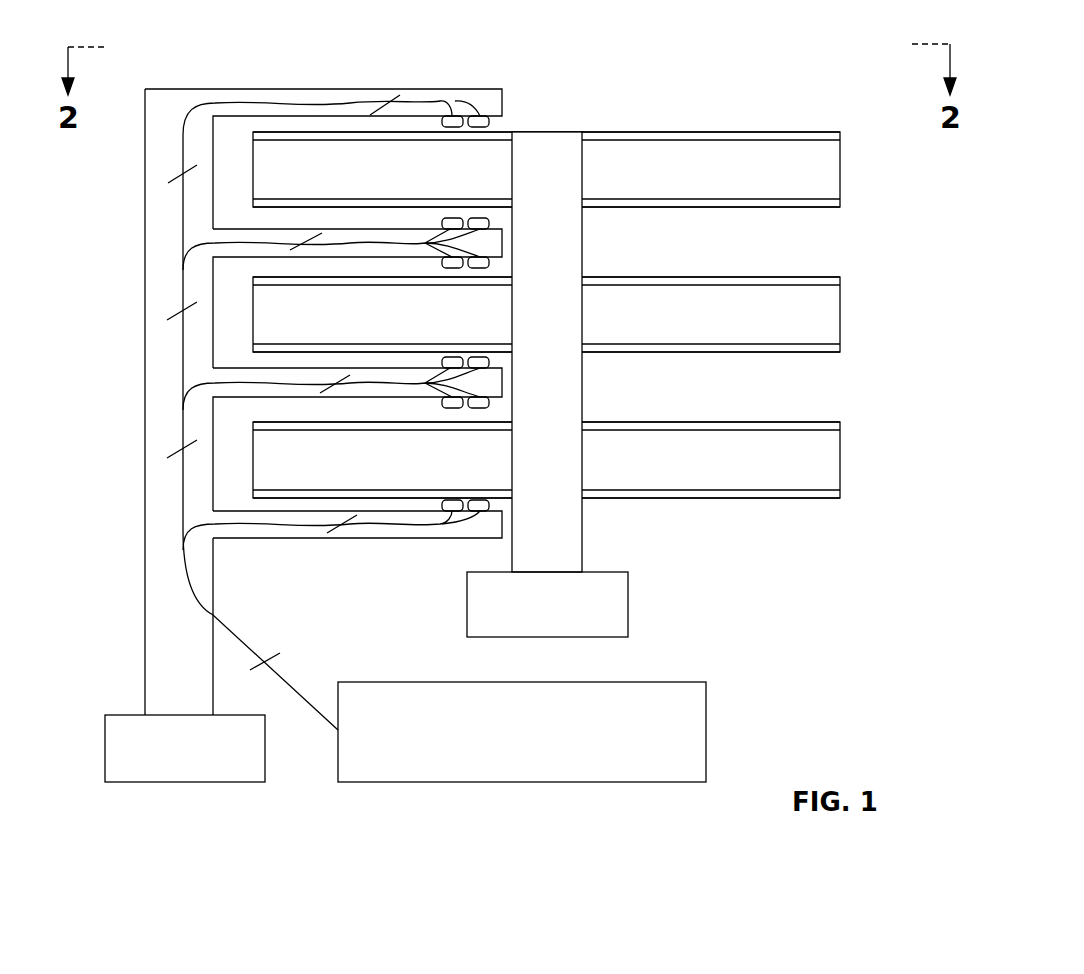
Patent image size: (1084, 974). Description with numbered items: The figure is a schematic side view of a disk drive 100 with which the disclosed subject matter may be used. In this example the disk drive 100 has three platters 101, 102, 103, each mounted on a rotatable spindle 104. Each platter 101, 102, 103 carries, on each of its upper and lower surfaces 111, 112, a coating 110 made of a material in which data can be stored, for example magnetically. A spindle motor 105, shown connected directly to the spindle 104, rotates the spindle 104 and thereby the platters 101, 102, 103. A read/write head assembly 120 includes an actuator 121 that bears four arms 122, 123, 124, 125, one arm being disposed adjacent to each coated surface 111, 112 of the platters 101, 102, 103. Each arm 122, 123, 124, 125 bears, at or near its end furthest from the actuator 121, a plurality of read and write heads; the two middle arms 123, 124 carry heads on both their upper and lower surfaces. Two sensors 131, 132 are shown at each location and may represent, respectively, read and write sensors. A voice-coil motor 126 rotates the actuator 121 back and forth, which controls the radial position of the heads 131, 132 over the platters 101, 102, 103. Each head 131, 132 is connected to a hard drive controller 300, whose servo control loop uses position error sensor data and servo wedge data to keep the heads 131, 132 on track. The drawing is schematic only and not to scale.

The disk drive 100 is at (188, 48).
The platter 101 is at (843, 168).
The platter 102 is at (843, 313).
The platter 103 is at (843, 458).
The spindle 104 is at (555, 137).
The spindle motor 105 is at (630, 606).
The coating 110 is at (840, 133).
The upper surface 111 is at (662, 132).
The lower surface 112 is at (662, 207).
The read/write head assembly 120 is at (273, 386).
The actuator 121 is at (145, 322).
The arm 122 is at (322, 89).
The arm 123 is at (338, 229).
The arm 124 is at (333, 368).
The arm 125 is at (338, 511).
The voice-coil motor 126 is at (141, 715).
The sensor 131 is at (478, 127).
The sensor 132 is at (452, 127).
The hard drive controller 300 is at (408, 682).